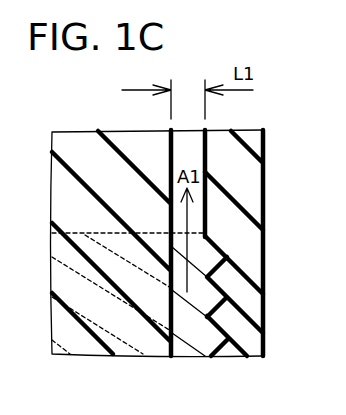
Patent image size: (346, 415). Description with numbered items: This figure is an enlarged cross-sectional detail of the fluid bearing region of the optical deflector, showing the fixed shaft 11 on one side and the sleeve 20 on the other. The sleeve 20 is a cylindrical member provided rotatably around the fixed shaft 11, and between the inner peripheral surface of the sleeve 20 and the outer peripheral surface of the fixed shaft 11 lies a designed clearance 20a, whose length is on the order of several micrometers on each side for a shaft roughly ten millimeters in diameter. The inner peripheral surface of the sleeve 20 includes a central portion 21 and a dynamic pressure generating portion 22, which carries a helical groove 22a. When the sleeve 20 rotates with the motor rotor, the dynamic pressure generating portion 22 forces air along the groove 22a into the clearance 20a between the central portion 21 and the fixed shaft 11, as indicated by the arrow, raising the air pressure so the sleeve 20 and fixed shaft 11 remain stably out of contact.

The fixed shaft 11 is at (78, 175).
The sleeve 20 is at (264, 143).
The clearance 20a is at (191, 150).
The central portion 21 is at (224, 165).
The dynamic pressure generating portion 22 is at (243, 312).
The groove 22a is at (122, 340).